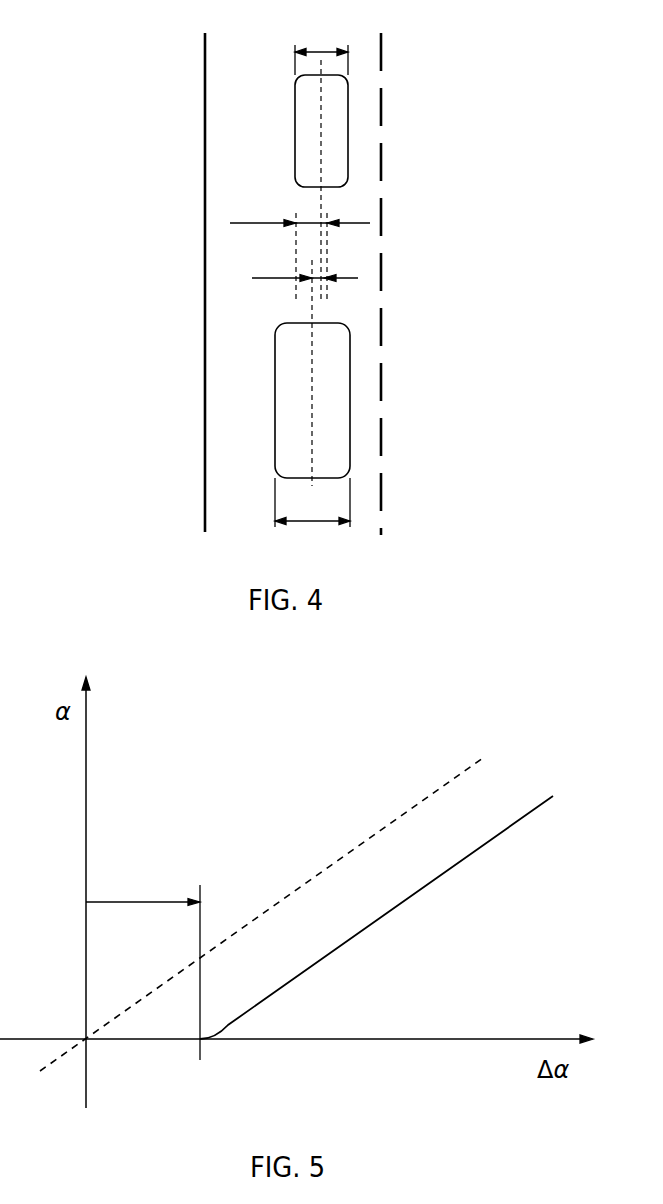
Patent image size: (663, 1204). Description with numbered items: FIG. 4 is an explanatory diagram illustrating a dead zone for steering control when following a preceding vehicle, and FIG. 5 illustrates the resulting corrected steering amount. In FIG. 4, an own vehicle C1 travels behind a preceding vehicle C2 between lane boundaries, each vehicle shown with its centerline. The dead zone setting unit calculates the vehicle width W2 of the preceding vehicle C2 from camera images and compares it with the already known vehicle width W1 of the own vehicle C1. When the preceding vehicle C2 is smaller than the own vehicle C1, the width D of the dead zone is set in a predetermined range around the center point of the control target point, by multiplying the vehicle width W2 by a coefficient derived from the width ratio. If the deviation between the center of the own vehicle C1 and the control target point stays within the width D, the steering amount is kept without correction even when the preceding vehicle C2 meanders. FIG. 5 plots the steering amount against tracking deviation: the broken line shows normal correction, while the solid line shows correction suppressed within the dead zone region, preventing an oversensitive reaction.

In FIG. 4, the own vehicle C1 is at (275, 415).
In FIG. 4, the preceding vehicle C2 is at (295, 140).
In FIG. 4, the vehicle width of the own vehicle W1 is at (312, 502).
In FIG. 4, the vehicle width of the preceding vehicle W2 is at (321, 49).
In FIG. 4, the width of the dead zone D is at (300, 250).
In FIG. 5, the width of the dead zone D is at (143, 961).